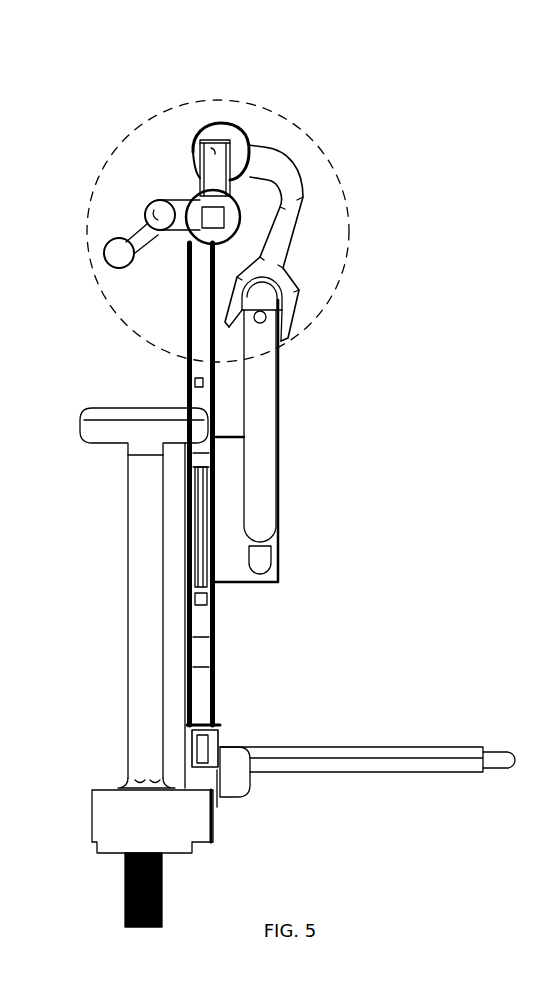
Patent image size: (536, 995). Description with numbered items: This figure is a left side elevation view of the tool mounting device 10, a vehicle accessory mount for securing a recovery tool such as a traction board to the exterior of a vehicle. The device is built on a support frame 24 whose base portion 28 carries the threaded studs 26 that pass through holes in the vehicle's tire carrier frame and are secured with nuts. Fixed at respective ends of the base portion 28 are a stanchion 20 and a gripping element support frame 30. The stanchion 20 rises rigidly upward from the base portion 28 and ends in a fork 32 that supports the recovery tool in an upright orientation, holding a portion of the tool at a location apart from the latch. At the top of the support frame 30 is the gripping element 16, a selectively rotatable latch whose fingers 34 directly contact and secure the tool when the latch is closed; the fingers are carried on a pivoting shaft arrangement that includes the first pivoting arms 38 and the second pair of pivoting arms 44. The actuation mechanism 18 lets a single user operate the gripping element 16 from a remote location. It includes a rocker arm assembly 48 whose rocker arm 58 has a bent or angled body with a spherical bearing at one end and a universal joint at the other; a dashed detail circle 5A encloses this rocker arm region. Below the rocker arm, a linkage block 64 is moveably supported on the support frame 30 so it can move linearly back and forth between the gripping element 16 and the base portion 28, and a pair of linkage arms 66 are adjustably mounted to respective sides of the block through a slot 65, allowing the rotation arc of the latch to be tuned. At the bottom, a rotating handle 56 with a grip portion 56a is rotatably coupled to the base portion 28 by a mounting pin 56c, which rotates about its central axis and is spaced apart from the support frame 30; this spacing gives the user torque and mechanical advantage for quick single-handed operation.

The tool mounting device 10 is at (395, 875).
The gripping element 16 is at (117, 200).
The actuation mechanism 18 is at (330, 508).
The stanchion 20 is at (145, 645).
The support frame 24 is at (113, 793).
The threaded studs 26 is at (162, 897).
The base portion 28 is at (105, 860).
The gripping element support frame 30 is at (197, 392).
The fork 32 is at (98, 425).
The fingers 34 is at (140, 240).
The pivoting arms 38 is at (183, 218).
The second pair of pivoting arms 44 is at (217, 170).
The rocker arm assembly 48 is at (322, 274).
The rotating handle 56 is at (500, 762).
The grip portion 56a is at (361, 755).
The mounting pin 56c is at (217, 797).
The rocker arm 58 is at (288, 218).
The linkage block 64 is at (231, 577).
The slot 65 is at (277, 570).
The linkage arms 66 is at (258, 423).
The detail region of FIG. 5A is at (352, 226).